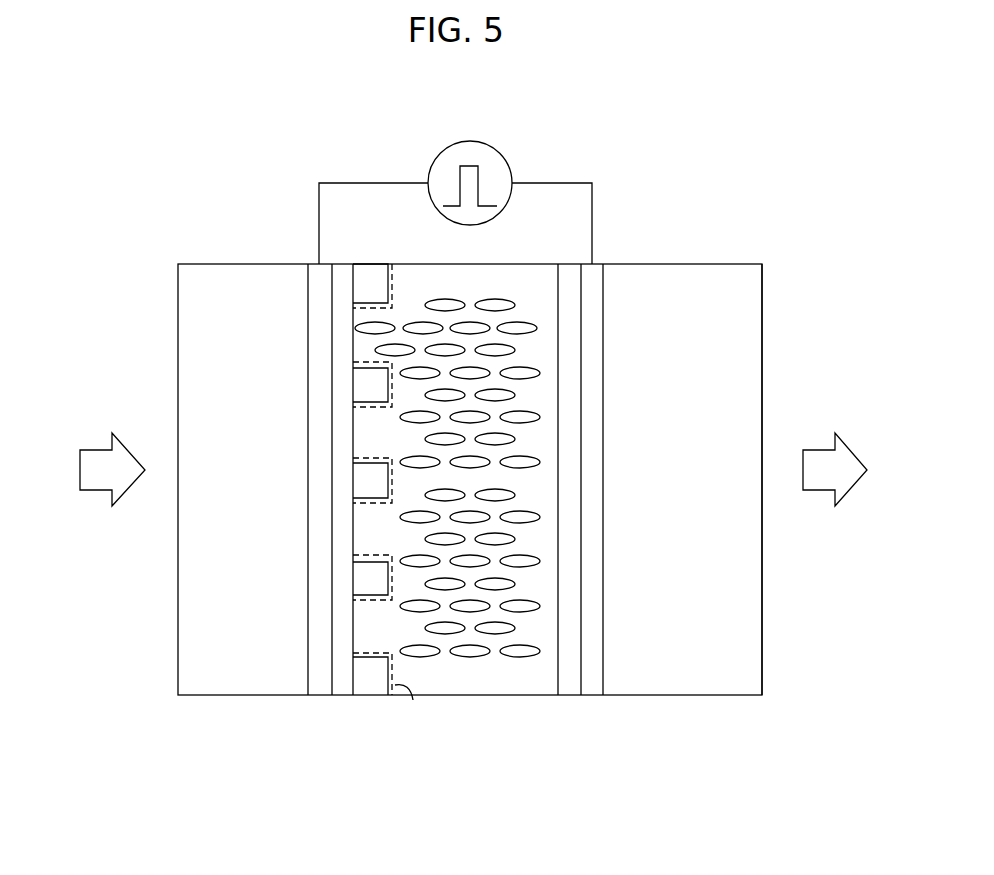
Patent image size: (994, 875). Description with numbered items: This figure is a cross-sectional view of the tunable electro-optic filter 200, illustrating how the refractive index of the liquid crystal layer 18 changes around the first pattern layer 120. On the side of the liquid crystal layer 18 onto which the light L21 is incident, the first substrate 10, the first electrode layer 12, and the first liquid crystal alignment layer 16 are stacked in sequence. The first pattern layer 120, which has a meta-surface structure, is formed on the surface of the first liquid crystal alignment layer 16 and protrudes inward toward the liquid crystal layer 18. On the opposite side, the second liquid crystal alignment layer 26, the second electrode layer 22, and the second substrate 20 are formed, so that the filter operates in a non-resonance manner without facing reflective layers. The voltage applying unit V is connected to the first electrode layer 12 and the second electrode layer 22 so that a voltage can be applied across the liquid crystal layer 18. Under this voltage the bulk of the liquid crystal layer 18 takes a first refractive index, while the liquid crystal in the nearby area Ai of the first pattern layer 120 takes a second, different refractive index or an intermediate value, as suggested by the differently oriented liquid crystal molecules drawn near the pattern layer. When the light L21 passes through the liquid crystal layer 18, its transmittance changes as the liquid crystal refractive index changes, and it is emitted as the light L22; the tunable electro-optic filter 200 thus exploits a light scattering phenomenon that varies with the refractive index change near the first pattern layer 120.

The tunable electro-optic filter 200 is at (772, 226).
The first substrate 10 is at (231, 688).
The first electrode layer 12 is at (318, 690).
The first liquid crystal alignment layer 16 is at (342, 690).
The first pattern layer 120 is at (378, 690).
The nearby area Ai is at (413, 700).
The liquid crystal layer 18 is at (463, 688).
The second liquid crystal alignment layer 26 is at (569, 688).
The second electrode layer 22 is at (592, 688).
The second substrate 20 is at (722, 688).
The voltage applying unit V is at (470, 141).
The light L21 is at (90, 469).
The light L22 is at (855, 469).